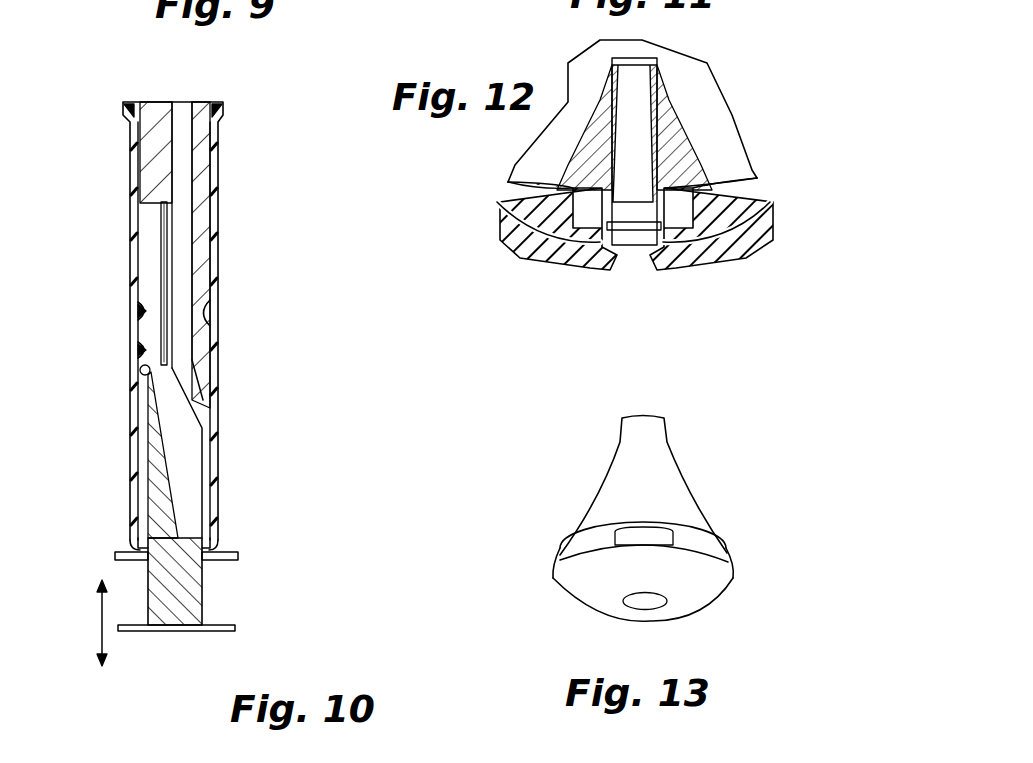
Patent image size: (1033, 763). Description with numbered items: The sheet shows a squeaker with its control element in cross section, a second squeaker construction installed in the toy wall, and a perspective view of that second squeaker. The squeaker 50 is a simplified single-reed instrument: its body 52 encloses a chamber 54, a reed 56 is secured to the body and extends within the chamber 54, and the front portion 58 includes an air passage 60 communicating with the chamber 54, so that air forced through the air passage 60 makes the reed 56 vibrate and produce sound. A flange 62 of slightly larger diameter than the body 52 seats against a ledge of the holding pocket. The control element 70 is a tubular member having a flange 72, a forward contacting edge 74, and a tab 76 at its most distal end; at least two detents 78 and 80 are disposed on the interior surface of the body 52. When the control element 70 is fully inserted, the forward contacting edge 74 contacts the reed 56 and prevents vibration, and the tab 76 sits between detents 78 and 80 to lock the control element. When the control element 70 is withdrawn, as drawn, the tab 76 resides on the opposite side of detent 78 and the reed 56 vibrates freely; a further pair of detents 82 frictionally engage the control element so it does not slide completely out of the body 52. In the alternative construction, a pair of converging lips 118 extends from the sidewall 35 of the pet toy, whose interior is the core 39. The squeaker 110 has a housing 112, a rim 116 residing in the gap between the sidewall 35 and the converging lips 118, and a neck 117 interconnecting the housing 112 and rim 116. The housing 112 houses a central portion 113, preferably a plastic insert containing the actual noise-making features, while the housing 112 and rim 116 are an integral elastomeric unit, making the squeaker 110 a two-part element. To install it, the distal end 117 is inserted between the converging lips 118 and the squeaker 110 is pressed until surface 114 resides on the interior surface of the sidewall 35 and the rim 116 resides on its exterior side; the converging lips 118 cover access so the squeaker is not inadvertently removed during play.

In FIG. 12, the sidewall 35 is at (520, 222).
In FIG. 12, the core 39 is at (695, 104).
In FIG. 10, the squeaker 50 is at (250, 277).
In FIG. 10, the body 52 is at (213, 176).
In FIG. 10, the chamber 54 is at (153, 227).
In FIG. 10, the reed 56 is at (158, 288).
In FIG. 10, the front portion 58 is at (155, 132).
In FIG. 10, the air passage 60 is at (177, 132).
In FIG. 10, the flange 62 is at (238, 553).
In FIG. 10, the control element 70 is at (187, 590).
In FIG. 10, the flange 72 is at (133, 632).
In FIG. 10, the forward contacting edge 74 is at (170, 367).
In FIG. 10, the tab 76 is at (147, 373).
In FIG. 10, the detent 78 is at (145, 348).
In FIG. 10, the detent 80 is at (142, 312).
In FIG. 10, the detents 82 is at (145, 543).
In FIG. 12, the squeaker 110 is at (636, 171).
In FIG. 13, the squeaker 110 is at (641, 526).
In FIG. 12, the housing 112 is at (590, 175).
In FIG. 13, the housing 112 is at (688, 490).
In FIG. 12, the central portion 113 is at (628, 140).
In FIG. 12, the surface 114 is at (540, 200).
In FIG. 13, the surface 114 is at (718, 545).
In FIG. 12, the rim 116 is at (560, 265).
In FIG. 13, the rim 116 is at (703, 585).
In FIG. 12, the neck 117 is at (635, 60).
In FIG. 13, the neck 117 is at (632, 415).
In FIG. 12, the converging lips 118 is at (612, 262).